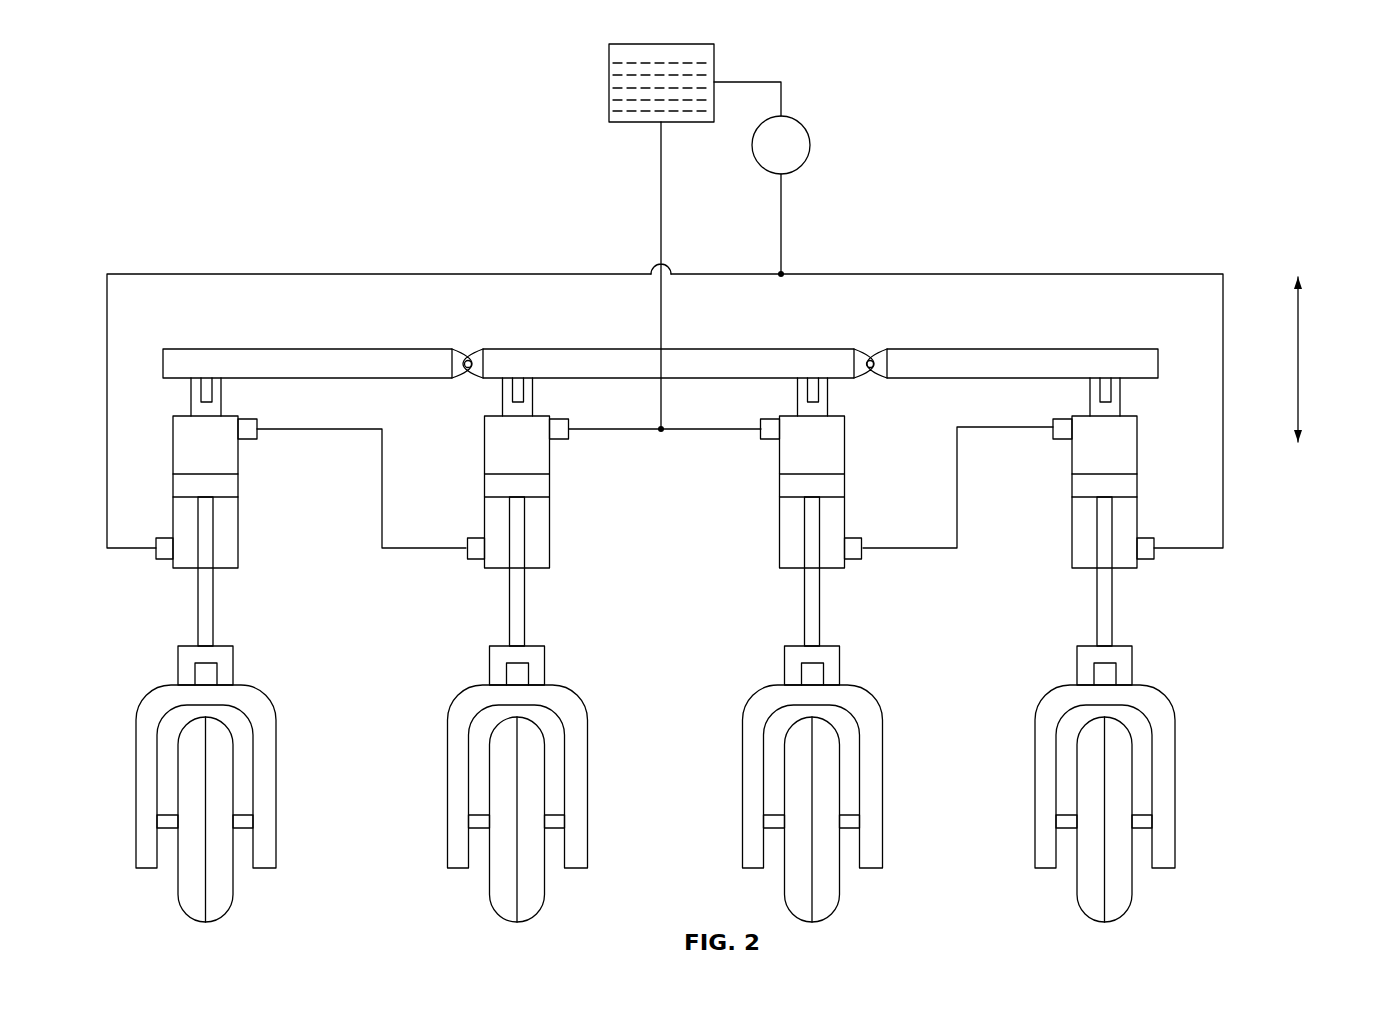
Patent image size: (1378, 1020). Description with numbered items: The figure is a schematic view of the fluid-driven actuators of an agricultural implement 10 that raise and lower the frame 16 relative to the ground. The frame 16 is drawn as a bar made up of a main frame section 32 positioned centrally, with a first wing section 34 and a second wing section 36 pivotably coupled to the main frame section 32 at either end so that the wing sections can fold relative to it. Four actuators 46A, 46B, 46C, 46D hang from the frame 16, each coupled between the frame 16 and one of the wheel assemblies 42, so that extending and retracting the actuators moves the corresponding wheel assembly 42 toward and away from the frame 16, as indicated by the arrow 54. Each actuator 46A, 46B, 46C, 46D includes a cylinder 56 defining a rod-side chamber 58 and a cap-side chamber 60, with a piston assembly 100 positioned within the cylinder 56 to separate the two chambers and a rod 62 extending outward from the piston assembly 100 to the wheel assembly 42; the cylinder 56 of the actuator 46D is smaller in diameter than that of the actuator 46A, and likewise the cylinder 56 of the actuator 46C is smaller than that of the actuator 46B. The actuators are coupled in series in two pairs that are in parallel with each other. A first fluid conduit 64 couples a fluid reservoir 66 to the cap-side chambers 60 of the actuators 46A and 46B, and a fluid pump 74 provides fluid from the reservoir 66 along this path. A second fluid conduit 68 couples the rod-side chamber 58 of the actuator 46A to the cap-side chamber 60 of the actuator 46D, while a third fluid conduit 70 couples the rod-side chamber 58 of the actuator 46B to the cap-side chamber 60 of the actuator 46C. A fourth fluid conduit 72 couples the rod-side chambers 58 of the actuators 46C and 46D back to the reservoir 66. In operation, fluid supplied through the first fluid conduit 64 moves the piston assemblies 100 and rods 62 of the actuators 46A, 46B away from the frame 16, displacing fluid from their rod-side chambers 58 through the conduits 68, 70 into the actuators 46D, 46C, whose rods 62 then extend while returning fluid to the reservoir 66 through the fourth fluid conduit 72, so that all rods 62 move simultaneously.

The implement 10 is at (230, 170).
The frame 16 is at (660, 326).
The main frame section 32 is at (575, 349).
The first wing section 34 is at (1018, 349).
The second wing section 36 is at (342, 349).
The wheel assembly 42 is at (270, 905).
The actuator 46A is at (494, 623).
The actuator 46B is at (789, 623).
The actuator 46C is at (1081, 623).
The actuator 46D is at (138, 590).
The arrow 54 is at (1300, 333).
The cylinder 56 is at (238, 443).
The rod-side chamber 58 is at (188, 510).
The cap-side chamber 60 is at (233, 467).
The rod 62 is at (214, 598).
The first fluid conduit 64 is at (659, 207).
The fluid reservoir 66 is at (609, 88).
The second fluid conduit 68 is at (383, 467).
The third fluid conduit 70 is at (958, 528).
The fourth fluid conduit 72 is at (1002, 272).
The fluid pump 74 is at (811, 145).
The piston assembly 100 is at (186, 496).